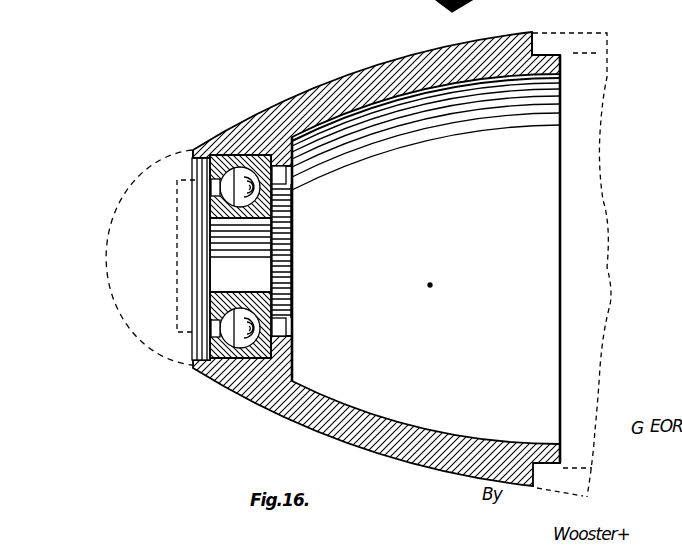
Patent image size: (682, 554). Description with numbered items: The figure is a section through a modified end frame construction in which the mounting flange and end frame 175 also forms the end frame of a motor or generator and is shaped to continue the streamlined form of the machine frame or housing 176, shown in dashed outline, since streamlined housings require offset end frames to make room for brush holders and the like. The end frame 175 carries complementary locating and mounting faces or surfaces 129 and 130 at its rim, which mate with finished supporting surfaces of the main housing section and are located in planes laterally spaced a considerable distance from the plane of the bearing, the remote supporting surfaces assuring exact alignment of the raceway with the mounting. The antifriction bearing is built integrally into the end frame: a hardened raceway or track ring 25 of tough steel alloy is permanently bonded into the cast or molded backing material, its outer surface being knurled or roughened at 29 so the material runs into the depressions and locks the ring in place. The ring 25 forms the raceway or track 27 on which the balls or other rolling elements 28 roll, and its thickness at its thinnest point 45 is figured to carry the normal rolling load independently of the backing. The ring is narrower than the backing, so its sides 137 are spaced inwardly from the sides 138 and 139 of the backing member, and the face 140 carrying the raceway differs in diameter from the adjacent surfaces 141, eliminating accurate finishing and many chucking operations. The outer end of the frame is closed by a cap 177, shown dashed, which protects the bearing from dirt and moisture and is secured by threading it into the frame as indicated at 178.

The raceway or track ring 25 is at (218, 150).
The raceway or track 27 is at (227, 230).
The balls or other rolling elements 28 is at (247, 230).
The knurled or roughened surface 29 is at (248, 153).
The thinnest point of insert ring 45 is at (291, 358).
The locating and mounting face or surface 129 is at (556, 52).
The locating and mounting face or surface 130 is at (535, 33).
The sides of insert ring 137 is at (190, 347).
The side of backing member 138 is at (188, 308).
The side of backing member 139 is at (295, 191).
The adjacent surfaces of backing member 141 is at (314, 169).
The face of insert ring 140 is at (215, 190).
The flange and end frame 175 is at (323, 85).
The motor or generator frame or housing 176 is at (586, 33).
The cap 177 is at (141, 178).
The threading 178 is at (200, 231).